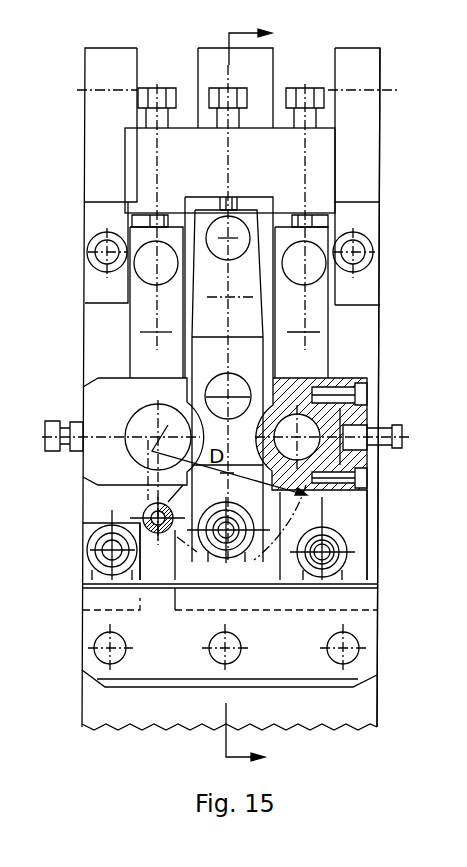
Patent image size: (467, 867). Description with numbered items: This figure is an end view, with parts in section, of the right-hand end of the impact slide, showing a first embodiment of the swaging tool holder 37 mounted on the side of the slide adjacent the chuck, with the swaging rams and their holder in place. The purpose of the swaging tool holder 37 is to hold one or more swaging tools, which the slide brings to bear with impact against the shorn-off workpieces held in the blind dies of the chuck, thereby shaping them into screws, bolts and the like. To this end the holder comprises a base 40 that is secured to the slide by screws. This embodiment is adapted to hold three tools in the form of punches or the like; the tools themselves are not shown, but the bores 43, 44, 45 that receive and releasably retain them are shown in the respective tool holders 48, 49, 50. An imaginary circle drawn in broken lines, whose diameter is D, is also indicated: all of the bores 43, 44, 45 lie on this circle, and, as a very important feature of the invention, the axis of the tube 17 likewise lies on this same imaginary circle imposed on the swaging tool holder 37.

The tube 17 is at (140, 513).
The swaging tool holder 37 is at (387, 110).
The base 40 is at (360, 625).
The bore 43 is at (132, 420).
The bore 44 is at (213, 392).
The bore 45 is at (347, 423).
The tool holder 48 is at (167, 383).
The tool holder 49 is at (240, 371).
The tool holder 50 is at (316, 373).